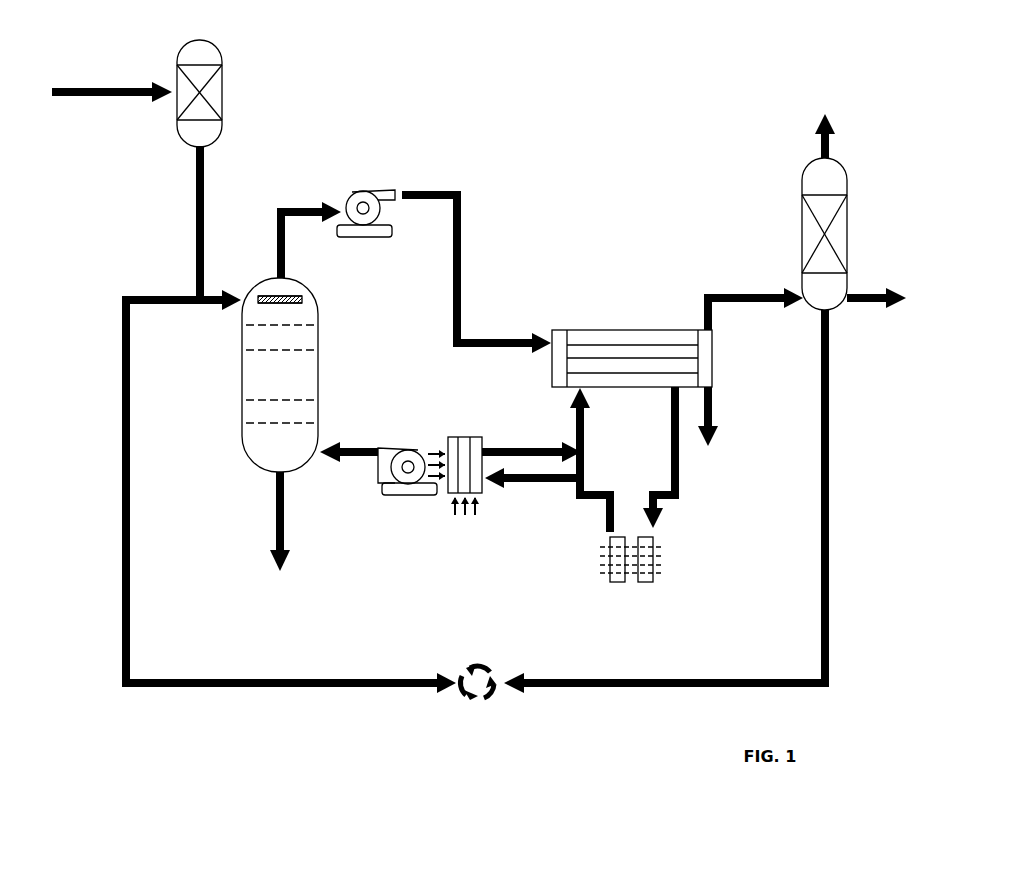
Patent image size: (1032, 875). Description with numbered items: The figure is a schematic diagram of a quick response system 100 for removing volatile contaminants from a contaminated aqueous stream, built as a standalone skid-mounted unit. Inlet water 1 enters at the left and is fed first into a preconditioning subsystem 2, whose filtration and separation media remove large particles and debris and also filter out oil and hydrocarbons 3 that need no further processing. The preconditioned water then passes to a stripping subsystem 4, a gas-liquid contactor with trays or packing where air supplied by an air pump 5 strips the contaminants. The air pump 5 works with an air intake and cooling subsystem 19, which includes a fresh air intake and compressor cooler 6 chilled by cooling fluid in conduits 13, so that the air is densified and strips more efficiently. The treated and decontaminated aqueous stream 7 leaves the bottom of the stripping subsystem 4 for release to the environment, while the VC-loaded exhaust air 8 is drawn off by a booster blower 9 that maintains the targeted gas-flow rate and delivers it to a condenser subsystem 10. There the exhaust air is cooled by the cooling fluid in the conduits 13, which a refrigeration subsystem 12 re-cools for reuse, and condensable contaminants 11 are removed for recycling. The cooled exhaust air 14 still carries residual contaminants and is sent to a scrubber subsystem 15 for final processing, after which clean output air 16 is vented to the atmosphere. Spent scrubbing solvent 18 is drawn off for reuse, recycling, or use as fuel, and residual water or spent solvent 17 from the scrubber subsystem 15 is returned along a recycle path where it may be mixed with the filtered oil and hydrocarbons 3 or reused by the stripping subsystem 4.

The quick response system 100 is at (80, 372).
The inlet water 1 is at (112, 103).
The preconditioning subsystem 2 is at (208, 52).
The oil and hydrocarbons 3 is at (277, 419).
The stripping subsystem 4 is at (255, 376).
The air pump 5 is at (400, 495).
The fresh air intake and compressor cooler 6 is at (448, 440).
The treated and decontaminated aqueous stream 7 is at (280, 534).
The exhaust air 8 is at (300, 240).
The booster blower 9 is at (373, 188).
The condenser subsystem 10 is at (618, 338).
The condensable contaminants 11 is at (709, 428).
The refrigeration subsystem 12 is at (610, 580).
The conduits 13 is at (622, 459).
The cooled exhaust air 14 is at (755, 301).
The scrubber subsystem 15 is at (805, 225).
The output air 16 is at (825, 126).
The spent solvent 17 is at (664, 501).
The spent scrubbing solvent 18 is at (890, 297).
The air intake and cooling subsystem 19 is at (548, 522).